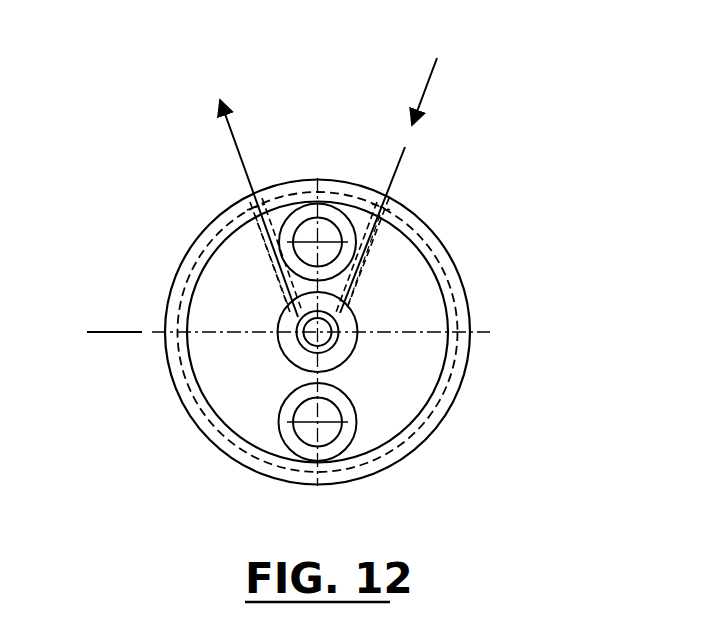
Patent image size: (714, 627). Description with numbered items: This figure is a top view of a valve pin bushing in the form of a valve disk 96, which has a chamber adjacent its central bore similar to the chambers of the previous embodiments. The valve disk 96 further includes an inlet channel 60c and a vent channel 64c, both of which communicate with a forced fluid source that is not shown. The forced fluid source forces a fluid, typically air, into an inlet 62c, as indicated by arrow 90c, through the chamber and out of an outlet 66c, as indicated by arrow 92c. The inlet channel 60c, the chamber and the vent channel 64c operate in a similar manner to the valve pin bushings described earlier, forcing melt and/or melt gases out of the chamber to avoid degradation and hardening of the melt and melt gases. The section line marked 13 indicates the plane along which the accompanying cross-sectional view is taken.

The valve disk 96 is at (468, 394).
The outlet 66c is at (250, 195).
The vent channel 64c is at (277, 245).
The arrow 92c is at (219, 107).
The inlet 62c is at (393, 193).
The inlet channel 60c is at (357, 275).
The arrow 90c is at (435, 75).
The section line 13- 13 is at (405, 147).